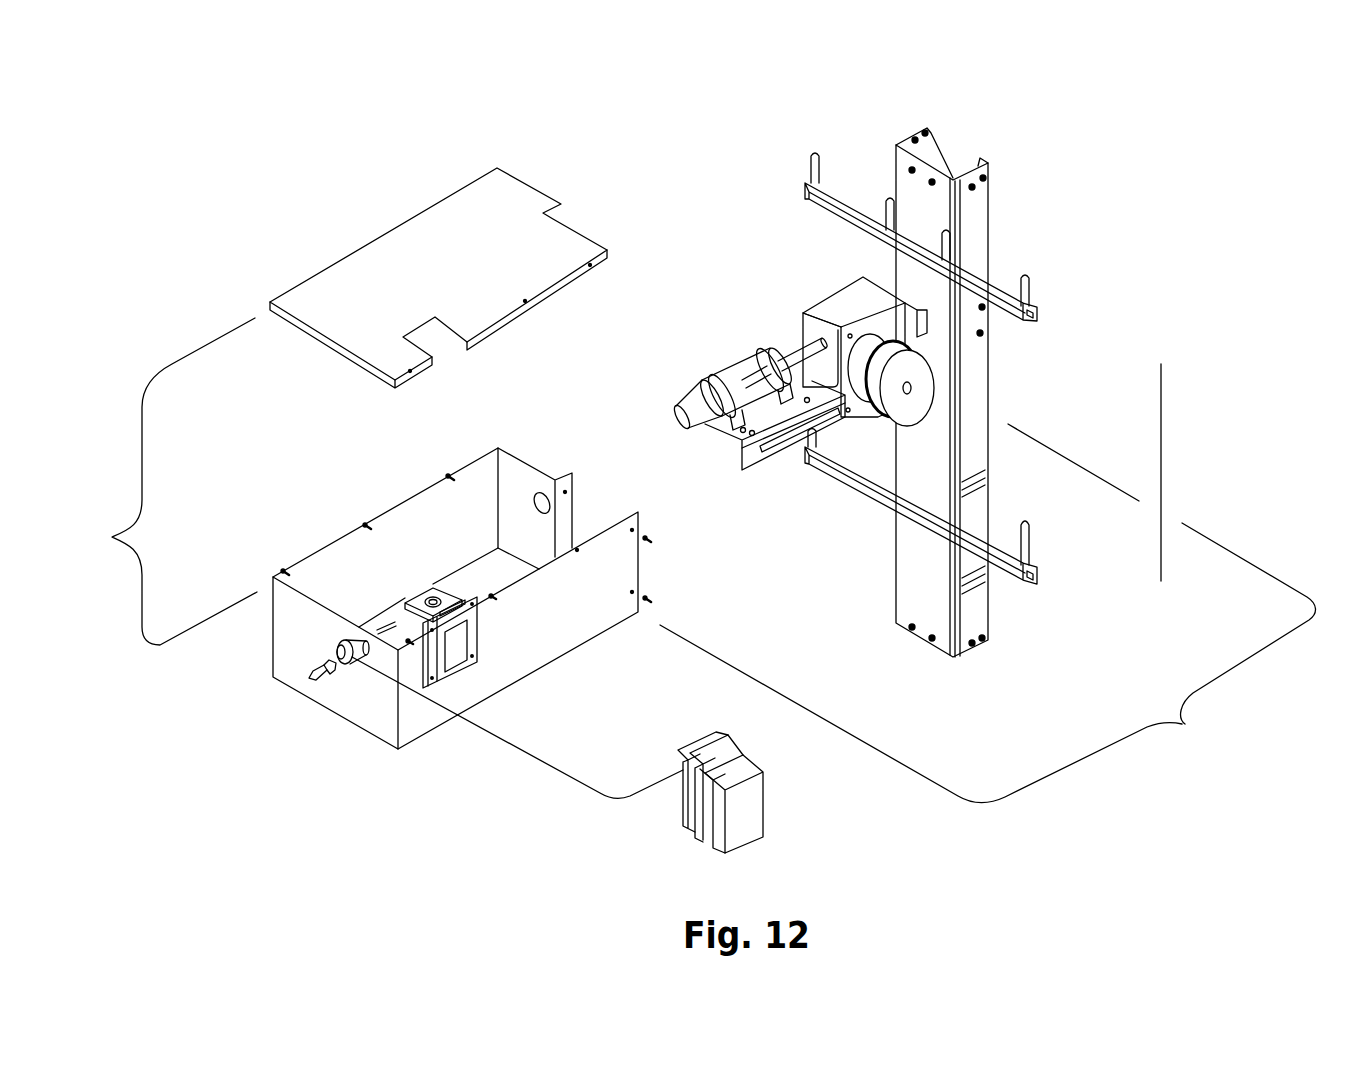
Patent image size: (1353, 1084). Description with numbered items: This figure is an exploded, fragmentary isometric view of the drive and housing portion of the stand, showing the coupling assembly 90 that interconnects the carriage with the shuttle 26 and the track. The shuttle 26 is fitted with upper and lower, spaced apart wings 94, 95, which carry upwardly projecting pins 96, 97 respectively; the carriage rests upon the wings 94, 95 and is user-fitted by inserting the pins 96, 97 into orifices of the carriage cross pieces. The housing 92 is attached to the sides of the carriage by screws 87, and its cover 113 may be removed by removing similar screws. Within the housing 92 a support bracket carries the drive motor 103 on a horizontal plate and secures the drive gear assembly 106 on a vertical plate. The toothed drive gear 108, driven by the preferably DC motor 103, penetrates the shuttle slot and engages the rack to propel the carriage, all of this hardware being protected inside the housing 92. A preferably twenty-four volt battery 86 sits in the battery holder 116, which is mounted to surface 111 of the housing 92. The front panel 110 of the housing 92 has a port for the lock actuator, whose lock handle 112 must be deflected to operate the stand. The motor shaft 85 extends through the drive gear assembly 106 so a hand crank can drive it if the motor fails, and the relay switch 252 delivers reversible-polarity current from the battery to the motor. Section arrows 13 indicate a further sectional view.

The section line arrows 13 is at (1069, 330).
The shuttle 26 is at (1025, 179).
The motor shaft 85 is at (815, 333).
The battery 86 is at (745, 810).
The screws 87 is at (498, 598).
The coupling assembly 90 is at (1185, 724).
The housing 92 is at (163, 481).
The upper wing 94 is at (993, 287).
The lower wing 95 is at (850, 480).
The pins 96 is at (1032, 284).
The pins 97 is at (1030, 540).
The drive motor 103 is at (740, 367).
The drive gear assembly 106 is at (843, 290).
The toothed drive gear 108 is at (902, 407).
The front panel 110 is at (293, 645).
The surface 111 is at (425, 513).
The lock handle 112 is at (348, 675).
The cover 113 is at (403, 272).
The battery holder 116 is at (458, 635).
The high current relay switch 252 is at (348, 660).